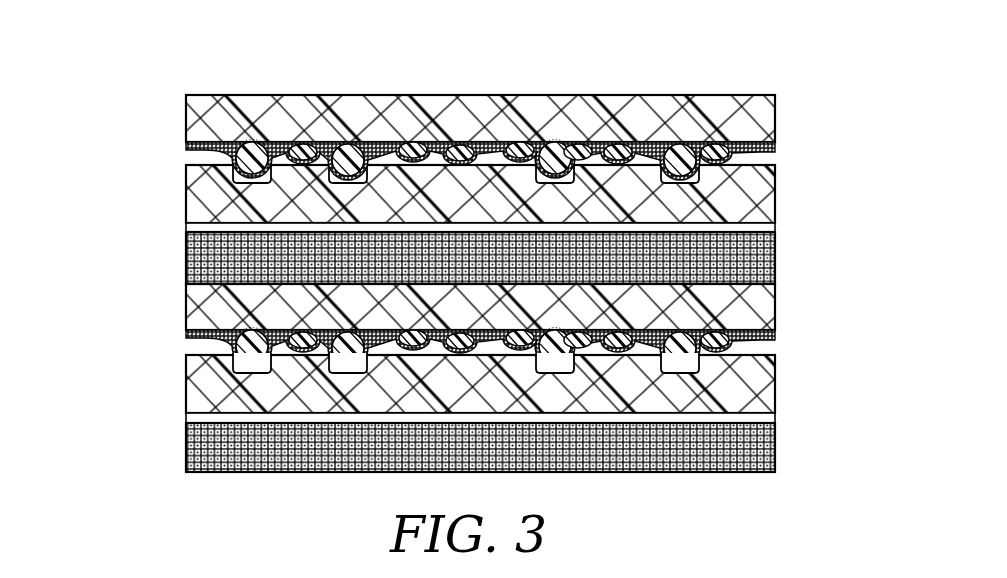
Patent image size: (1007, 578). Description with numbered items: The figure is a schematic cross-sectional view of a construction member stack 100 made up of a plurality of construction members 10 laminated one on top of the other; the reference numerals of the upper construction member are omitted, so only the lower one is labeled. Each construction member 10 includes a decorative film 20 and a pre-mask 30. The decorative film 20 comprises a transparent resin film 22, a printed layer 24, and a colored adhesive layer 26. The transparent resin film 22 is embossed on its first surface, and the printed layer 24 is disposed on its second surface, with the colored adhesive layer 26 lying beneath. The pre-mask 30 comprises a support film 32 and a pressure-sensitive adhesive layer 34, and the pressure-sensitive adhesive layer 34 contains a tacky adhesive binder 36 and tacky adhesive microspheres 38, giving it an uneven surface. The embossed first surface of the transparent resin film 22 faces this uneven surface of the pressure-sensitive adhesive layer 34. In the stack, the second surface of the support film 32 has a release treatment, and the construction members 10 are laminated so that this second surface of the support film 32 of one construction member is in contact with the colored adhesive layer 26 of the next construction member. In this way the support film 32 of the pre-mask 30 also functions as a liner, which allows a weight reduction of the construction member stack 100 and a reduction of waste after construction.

The construction member stack 100 is at (760, 67).
The construction member 10 is at (878, 285).
The decorative film 20 is at (184, 355).
The transparent resin film 22 is at (782, 412).
The printed layer 24 is at (765, 415).
The colored adhesive layer 26 is at (763, 445).
The pre-mask 30 is at (100, 368).
The support film 32 is at (763, 300).
The pressure-sensitive adhesive layer 34 is at (173, 368).
The tacky adhesive binder 36 is at (770, 338).
The tacky adhesive microspheres 38 is at (242, 338).